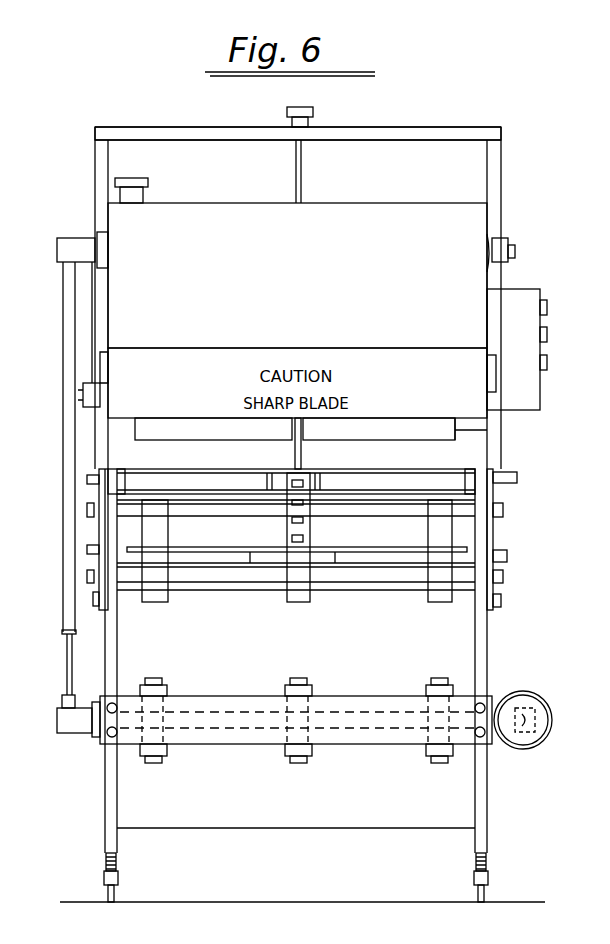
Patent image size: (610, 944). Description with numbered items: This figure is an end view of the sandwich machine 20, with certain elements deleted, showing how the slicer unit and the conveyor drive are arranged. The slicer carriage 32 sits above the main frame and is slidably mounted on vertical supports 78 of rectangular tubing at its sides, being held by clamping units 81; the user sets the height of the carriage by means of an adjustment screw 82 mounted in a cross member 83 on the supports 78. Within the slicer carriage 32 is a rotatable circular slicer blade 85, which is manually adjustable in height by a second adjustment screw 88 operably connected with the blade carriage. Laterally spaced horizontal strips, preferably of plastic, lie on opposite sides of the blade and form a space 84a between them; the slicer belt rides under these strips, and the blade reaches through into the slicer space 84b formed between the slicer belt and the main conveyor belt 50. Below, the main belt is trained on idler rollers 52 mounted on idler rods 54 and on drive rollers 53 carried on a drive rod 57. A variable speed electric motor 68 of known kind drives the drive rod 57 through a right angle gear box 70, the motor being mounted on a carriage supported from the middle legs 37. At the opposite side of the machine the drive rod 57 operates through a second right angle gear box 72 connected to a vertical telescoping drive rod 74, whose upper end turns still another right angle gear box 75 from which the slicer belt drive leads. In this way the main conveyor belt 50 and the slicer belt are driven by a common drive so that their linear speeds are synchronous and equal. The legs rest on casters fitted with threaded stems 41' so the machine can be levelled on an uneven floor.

The sandwich machine 20 is at (146, 100).
The slicer carriage 32 is at (367, 202).
The middle legs 37 is at (105, 824).
The threaded stems 41' is at (291, 877).
The conveyor belt 50 is at (366, 565).
The idler rollers 52 is at (150, 600).
The drive rollers 53 is at (295, 680).
The idler rods 54 is at (215, 565).
The drive rod 57 is at (362, 712).
The variable speed electric motor 68 is at (551, 705).
The right angle gear box 70 is at (531, 746).
The second right angle gear box 72 is at (68, 735).
The vertical telescoping drive rod 74 is at (66, 380).
The right angle gear box 75 is at (68, 240).
The vertical supports 78 is at (497, 160).
The clamping units 81 is at (505, 238).
The adjustment screw 82 is at (314, 108).
The cross member 83 is at (448, 128).
The space 84a is at (162, 426).
The slicer space 84b is at (458, 447).
The circular slicer blade 85 is at (305, 463).
The adjustment screw 88 is at (140, 178).